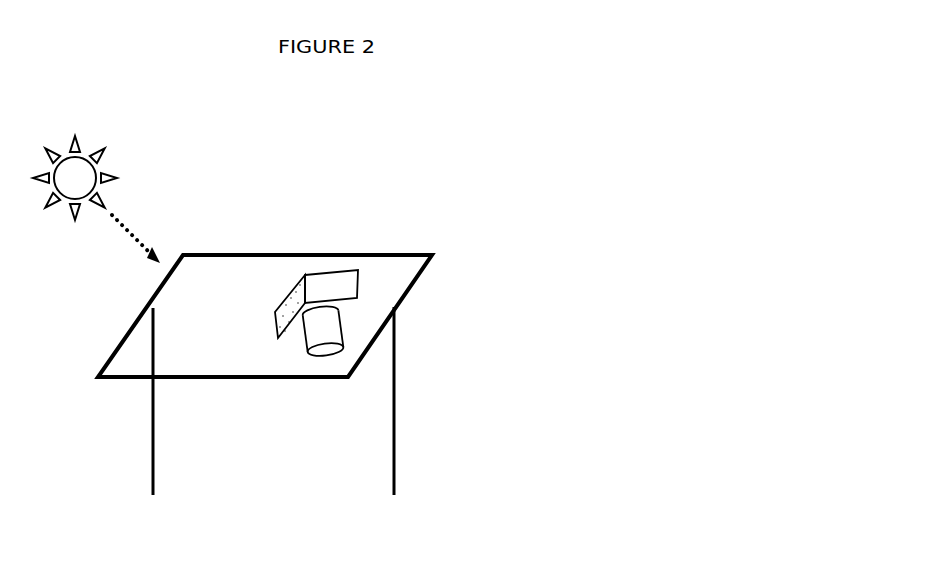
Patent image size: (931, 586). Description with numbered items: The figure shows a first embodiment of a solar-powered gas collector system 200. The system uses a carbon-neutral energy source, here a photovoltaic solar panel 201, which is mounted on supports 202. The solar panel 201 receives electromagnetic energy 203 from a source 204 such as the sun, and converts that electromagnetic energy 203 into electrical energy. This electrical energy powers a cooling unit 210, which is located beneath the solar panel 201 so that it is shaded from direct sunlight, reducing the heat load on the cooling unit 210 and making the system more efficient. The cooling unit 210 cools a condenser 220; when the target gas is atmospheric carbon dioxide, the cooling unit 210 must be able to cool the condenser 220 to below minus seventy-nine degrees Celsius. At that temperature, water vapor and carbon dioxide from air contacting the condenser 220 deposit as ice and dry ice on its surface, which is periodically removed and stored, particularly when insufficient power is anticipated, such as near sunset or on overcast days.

The gas collector system 200 is at (520, 187).
The photovoltaic solar panel 201 is at (226, 252).
The supports 202 is at (148, 442).
The electromagnetic energy 203 is at (142, 231).
The source 204 is at (137, 152).
The cooling unit 210 is at (329, 286).
The condenser 220 is at (327, 322).